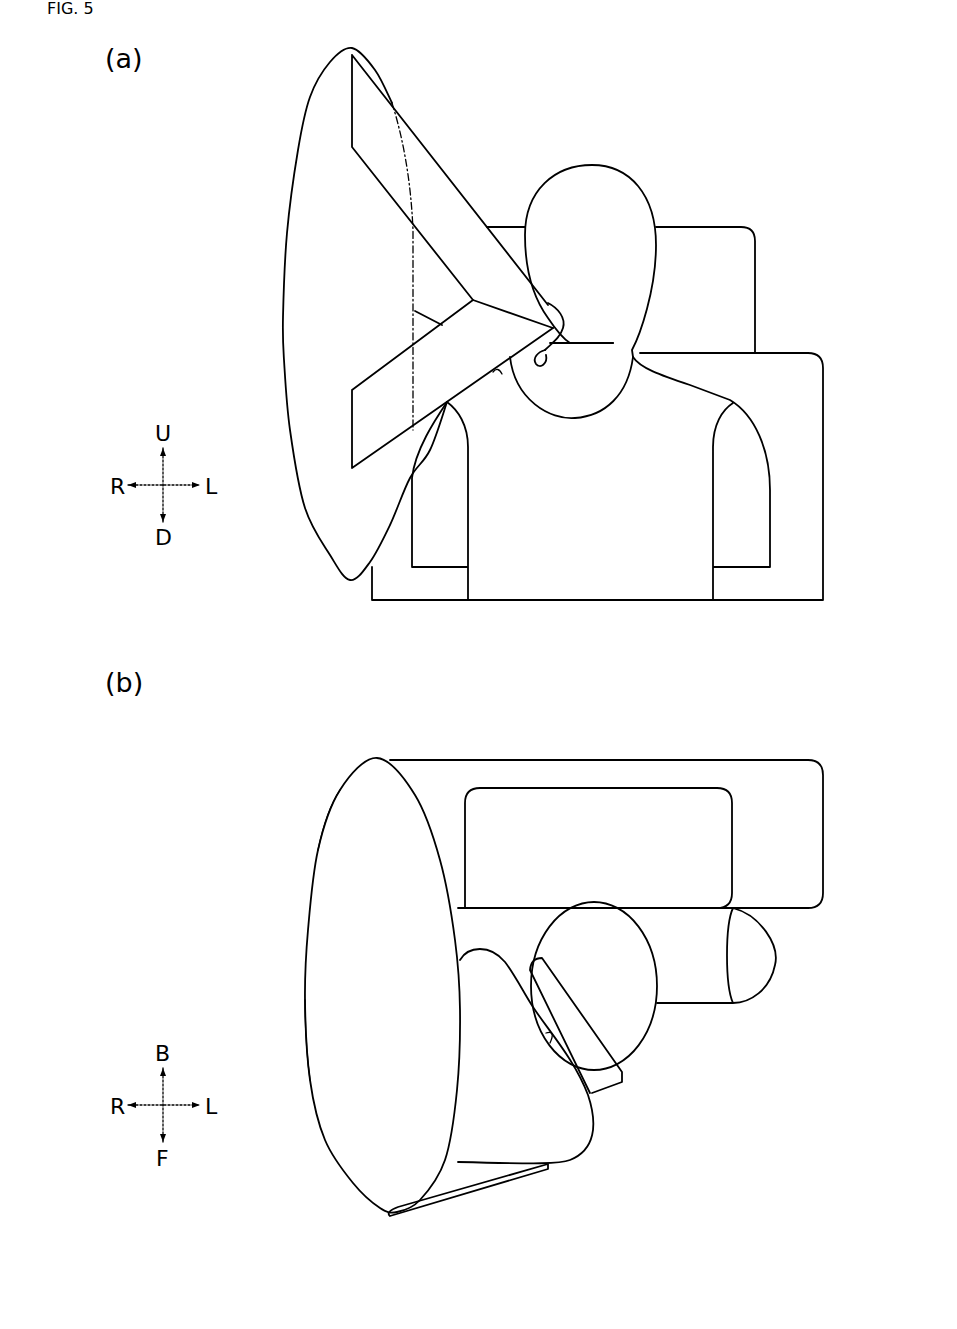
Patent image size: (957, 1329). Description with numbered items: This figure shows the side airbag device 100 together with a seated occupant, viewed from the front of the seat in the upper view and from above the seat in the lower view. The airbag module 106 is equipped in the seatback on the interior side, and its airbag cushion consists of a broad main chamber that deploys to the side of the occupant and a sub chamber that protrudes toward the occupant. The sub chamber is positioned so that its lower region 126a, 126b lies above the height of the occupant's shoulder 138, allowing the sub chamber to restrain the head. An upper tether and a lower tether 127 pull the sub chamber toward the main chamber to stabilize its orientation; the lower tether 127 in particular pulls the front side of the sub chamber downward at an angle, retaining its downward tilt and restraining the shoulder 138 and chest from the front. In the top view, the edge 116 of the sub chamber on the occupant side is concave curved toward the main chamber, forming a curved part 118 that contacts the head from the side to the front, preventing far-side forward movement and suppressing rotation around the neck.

The side airbag device 100 is at (398, 308).
The airbag module 106 is at (352, 768).
The edge 116 is at (550, 1043).
The curved part 118 is at (583, 1003).
The lower region 126a is at (540, 298).
The lower region 126b is at (543, 363).
The lower tether 127 is at (395, 357).
The shoulder 138 is at (495, 377).